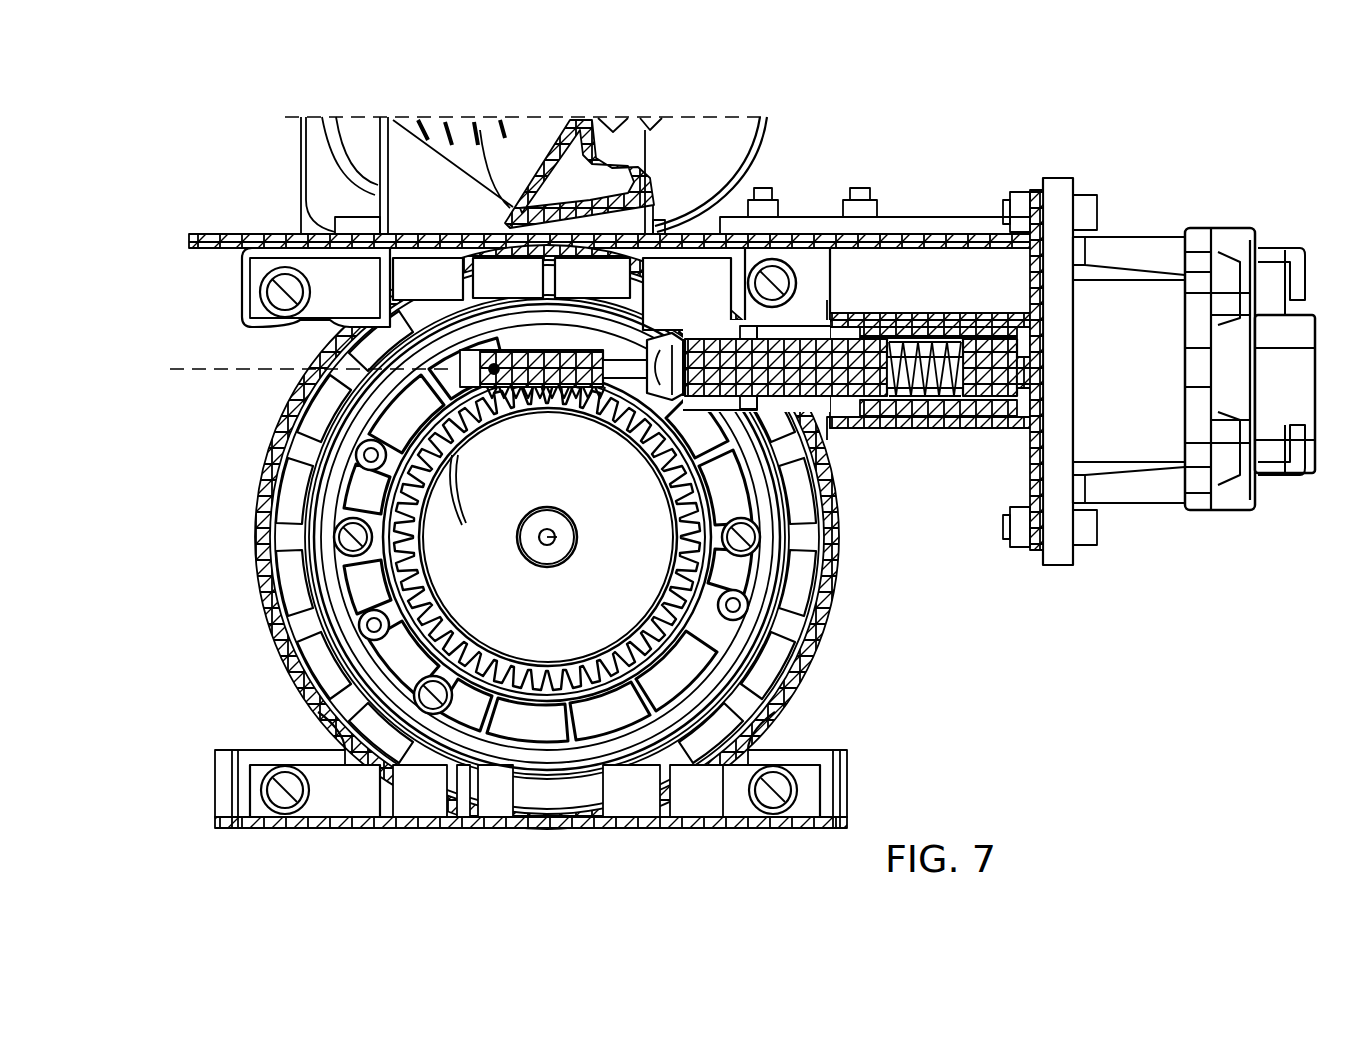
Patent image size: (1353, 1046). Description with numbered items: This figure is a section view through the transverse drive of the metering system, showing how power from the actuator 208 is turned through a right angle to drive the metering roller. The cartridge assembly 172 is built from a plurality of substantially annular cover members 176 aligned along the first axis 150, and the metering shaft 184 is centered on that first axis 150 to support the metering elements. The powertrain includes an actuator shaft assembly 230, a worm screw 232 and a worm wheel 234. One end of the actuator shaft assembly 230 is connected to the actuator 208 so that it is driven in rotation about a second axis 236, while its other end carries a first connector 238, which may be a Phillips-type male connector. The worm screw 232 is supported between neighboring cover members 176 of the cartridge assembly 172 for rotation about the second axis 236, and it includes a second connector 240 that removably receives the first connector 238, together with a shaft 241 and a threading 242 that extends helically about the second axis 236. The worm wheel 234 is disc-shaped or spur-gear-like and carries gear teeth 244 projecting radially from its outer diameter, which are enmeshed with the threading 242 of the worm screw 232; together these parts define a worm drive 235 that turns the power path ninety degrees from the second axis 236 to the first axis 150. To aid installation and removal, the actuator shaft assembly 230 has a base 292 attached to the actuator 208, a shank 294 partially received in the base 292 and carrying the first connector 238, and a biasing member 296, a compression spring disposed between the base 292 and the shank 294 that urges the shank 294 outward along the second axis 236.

The first axis 150 is at (568, 537).
The cartridge assembly 172 is at (740, 650).
The cover members 176 is at (360, 573).
The metering shaft 184 is at (552, 552).
The actuator 208 is at (1118, 355).
The actuator shaft assembly 230 is at (845, 328).
The worm screw 232 is at (577, 347).
The worm wheel 234 is at (620, 587).
The worm drive 235 is at (472, 286).
The second axis 236 is at (215, 369).
The first connector 238 is at (712, 340).
The second connector 240 is at (660, 345).
The shaft 241 is at (618, 430).
The threading 242 is at (505, 372).
The gear teeth 244 is at (445, 466).
The base 292 is at (990, 355).
The shank 294 is at (855, 385).
The biasing member 296 is at (935, 402).